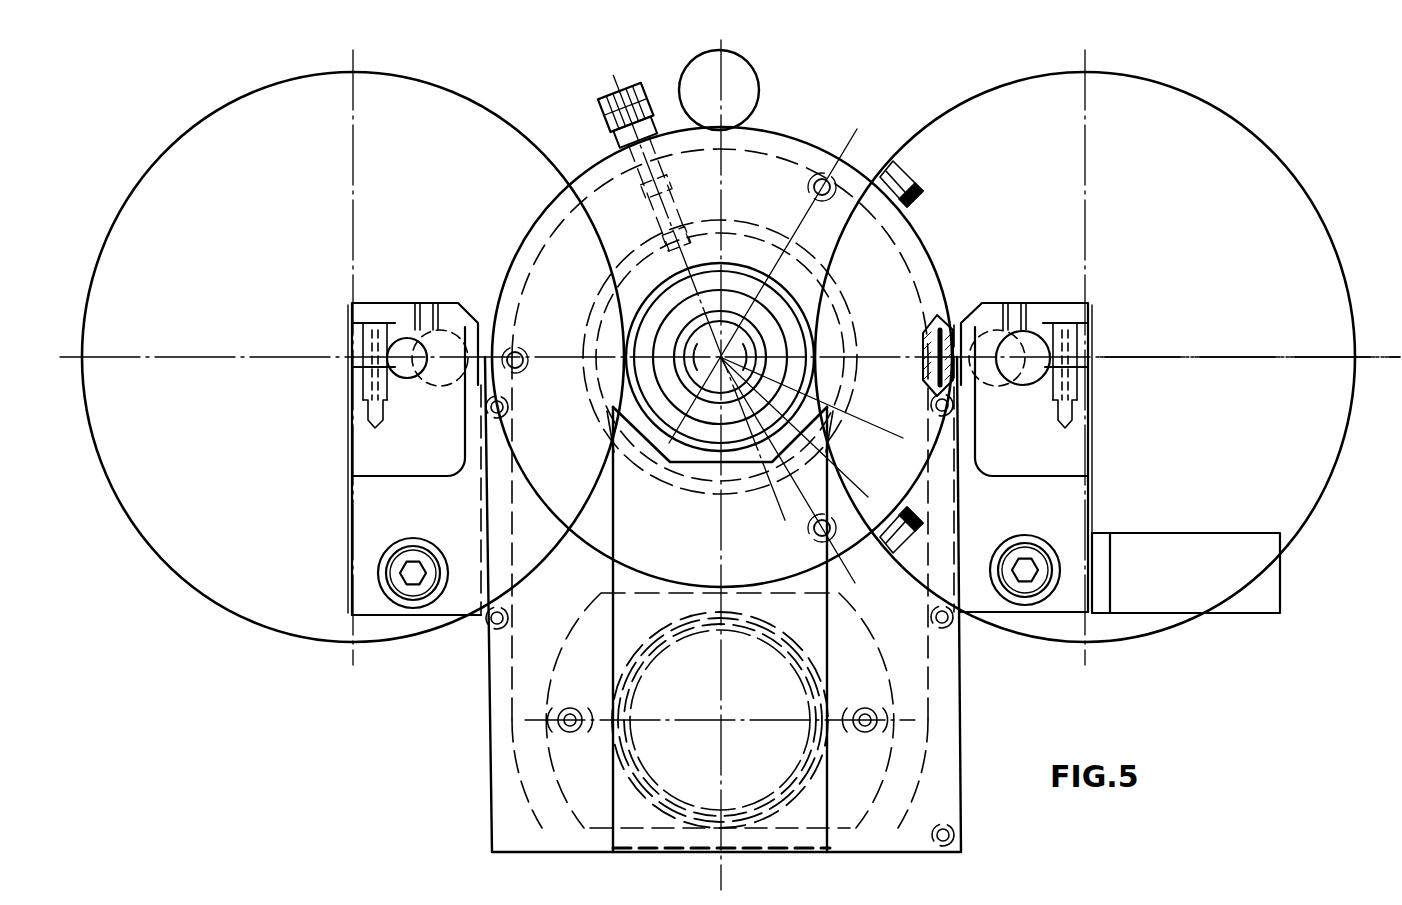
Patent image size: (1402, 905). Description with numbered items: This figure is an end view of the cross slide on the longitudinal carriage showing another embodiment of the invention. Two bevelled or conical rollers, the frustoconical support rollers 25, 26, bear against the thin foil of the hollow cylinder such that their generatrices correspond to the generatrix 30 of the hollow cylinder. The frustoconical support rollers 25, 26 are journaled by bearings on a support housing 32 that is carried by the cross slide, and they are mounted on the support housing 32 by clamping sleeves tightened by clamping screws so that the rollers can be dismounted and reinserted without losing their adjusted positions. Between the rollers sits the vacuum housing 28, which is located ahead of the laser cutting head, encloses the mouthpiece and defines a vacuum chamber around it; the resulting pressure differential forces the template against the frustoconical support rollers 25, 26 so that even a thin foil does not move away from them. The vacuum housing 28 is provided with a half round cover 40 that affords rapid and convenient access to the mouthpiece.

The frustoconical support roller 25 is at (172, 197).
The frustoconical support roller 26 is at (1258, 172).
The vacuum housing 28 is at (535, 640).
The generatrix 30 is at (1235, 357).
The support housing 32 is at (384, 453).
The half round cover 40 is at (793, 148).